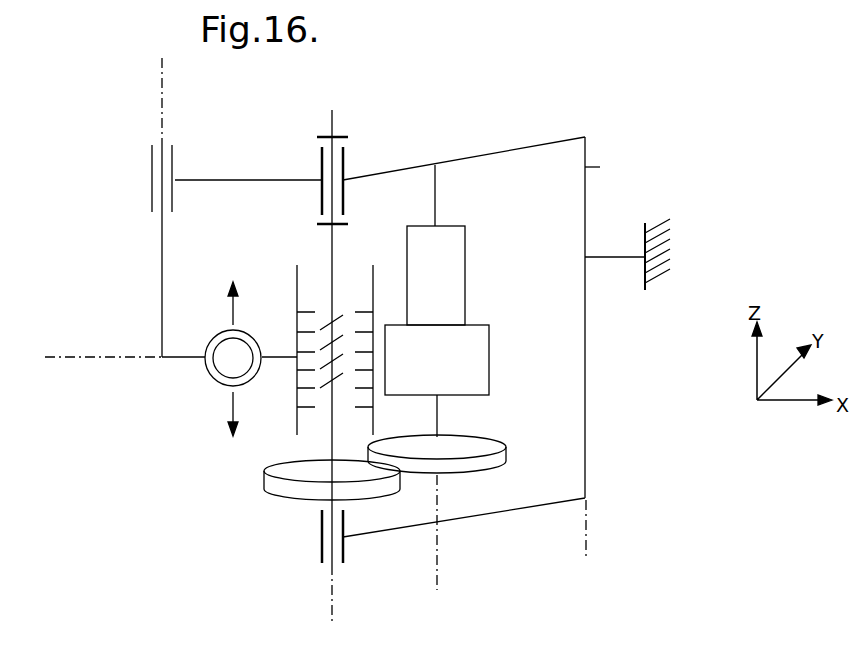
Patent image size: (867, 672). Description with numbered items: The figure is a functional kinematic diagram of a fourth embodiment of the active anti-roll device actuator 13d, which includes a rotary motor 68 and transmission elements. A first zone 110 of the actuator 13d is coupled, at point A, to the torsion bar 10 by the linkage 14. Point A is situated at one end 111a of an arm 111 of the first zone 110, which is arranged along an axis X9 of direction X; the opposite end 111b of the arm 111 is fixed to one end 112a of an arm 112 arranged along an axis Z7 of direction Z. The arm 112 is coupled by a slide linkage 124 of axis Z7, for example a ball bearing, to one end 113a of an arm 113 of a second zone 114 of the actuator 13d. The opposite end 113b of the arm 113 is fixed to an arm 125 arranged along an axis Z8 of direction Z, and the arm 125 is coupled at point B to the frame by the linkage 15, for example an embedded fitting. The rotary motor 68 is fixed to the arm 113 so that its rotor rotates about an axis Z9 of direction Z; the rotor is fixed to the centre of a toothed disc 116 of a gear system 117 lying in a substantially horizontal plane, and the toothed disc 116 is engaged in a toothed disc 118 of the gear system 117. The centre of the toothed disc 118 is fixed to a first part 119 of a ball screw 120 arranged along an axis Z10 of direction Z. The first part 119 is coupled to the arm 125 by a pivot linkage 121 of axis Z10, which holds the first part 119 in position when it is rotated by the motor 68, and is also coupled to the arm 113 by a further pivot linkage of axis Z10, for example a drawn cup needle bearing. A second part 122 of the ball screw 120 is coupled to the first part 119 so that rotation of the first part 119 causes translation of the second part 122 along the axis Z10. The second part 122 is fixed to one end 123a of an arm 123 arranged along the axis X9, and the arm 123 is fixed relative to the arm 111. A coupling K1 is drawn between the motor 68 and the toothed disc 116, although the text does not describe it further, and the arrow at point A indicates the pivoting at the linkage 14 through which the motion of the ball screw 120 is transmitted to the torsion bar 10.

The torsion bar 10 is at (228, 360).
The actuator 13d is at (606, 104).
The linkage 14 is at (220, 386).
The linkage 15 is at (666, 232).
The rotary motor 68 is at (466, 250).
The first zone 110 is at (150, 272).
The arm 111 is at (177, 358).
The end of arm 111a is at (196, 357).
The opposite end of arm 111b is at (163, 358).
The arm 112 is at (160, 237).
The end of arm 112a is at (162, 355).
The arm 113 is at (270, 178).
The end of arm 113a is at (183, 178).
The opposite end of arm 113b is at (577, 136).
The second zone 114 is at (436, 128).
The toothed disc 116 is at (486, 438).
The gear system 117 is at (484, 490).
The toothed disc 118 is at (303, 493).
The first part of ball screw 119 is at (267, 489).
The ball screw 120 is at (357, 262).
The pivot linkage 121 is at (322, 553).
The second part of ball screw 122 is at (297, 265).
The arm 123 is at (280, 355).
The end of arm 123a is at (290, 367).
The slide linkage 124 is at (148, 180).
The arm 125 is at (346, 150).
The coupling K1 is at (490, 357).
The point A is at (198, 358).
The point B is at (588, 260).
The axis Z7 is at (150, 78).
The axis Z8 is at (588, 533).
The axis Z9 is at (438, 562).
The axis Z10 is at (335, 600).
The axis X9 is at (60, 372).